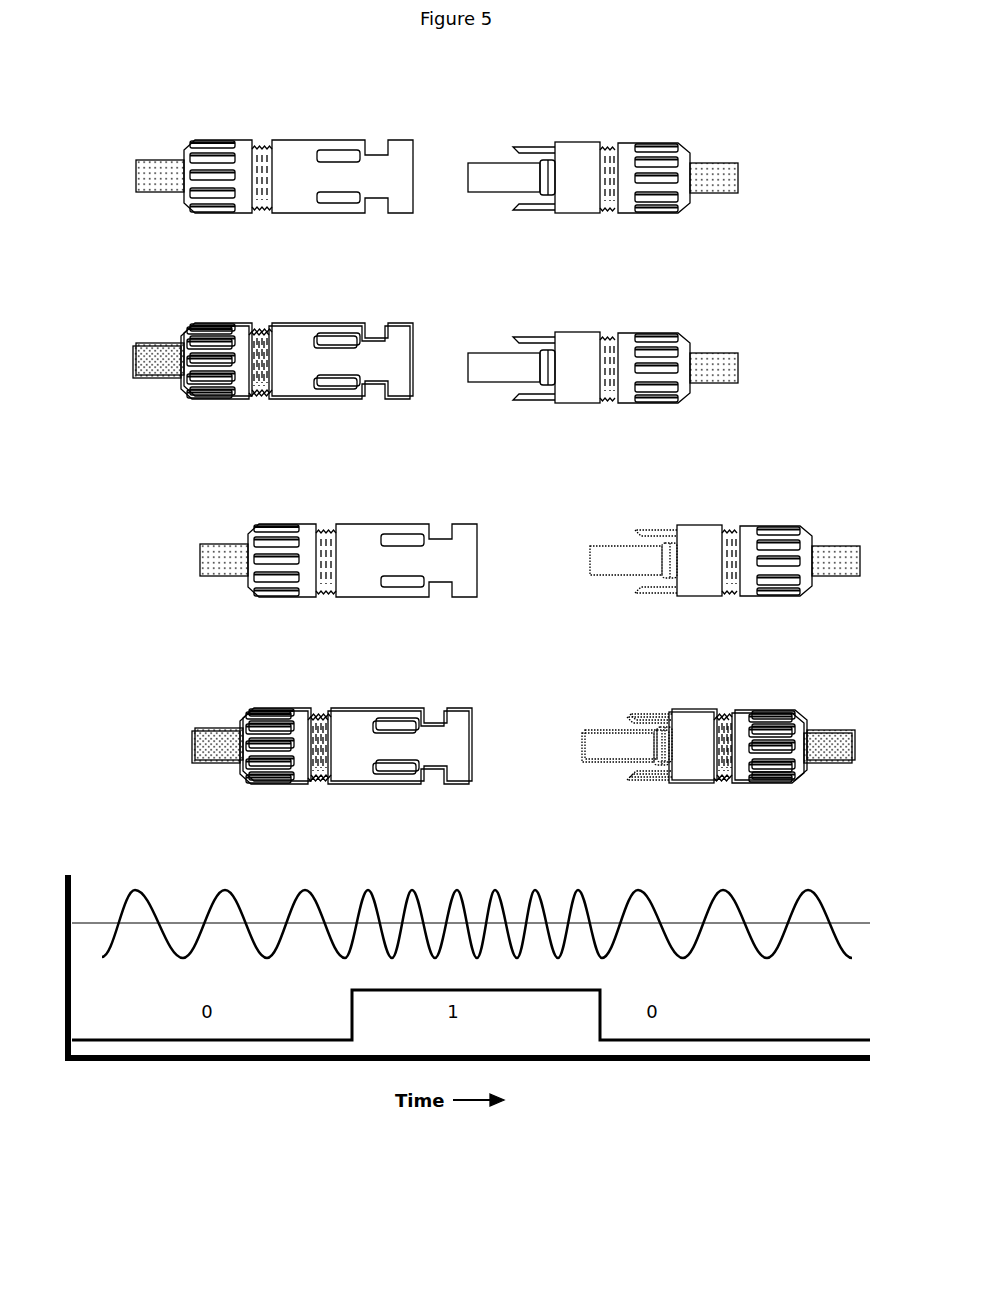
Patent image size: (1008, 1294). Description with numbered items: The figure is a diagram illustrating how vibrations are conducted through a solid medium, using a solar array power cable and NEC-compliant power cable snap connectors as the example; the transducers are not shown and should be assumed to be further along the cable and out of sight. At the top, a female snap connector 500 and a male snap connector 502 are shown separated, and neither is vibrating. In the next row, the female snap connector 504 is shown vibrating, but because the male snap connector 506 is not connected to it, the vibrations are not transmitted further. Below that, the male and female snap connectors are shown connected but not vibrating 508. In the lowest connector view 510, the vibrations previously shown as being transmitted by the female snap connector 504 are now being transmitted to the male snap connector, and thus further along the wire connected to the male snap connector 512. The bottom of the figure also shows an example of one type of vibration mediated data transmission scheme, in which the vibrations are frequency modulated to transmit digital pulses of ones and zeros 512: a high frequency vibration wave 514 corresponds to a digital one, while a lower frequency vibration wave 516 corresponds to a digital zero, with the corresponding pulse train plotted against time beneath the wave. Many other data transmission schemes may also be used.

The female snap connector (not vibrating) 500 is at (338, 127).
The male snap connector (not vibrating) 502 is at (598, 128).
The vibrating female snap connector 504 is at (325, 317).
The male snap connector (disconnected) 506 is at (577, 322).
The connected snap connectors (not vibrating) 508 is at (448, 508).
The connected snap connectors (vibrating) 510 is at (463, 690).
The frequency modulated vibration signal 512 is at (493, 906).
The high frequency vibration wave 514 is at (482, 878).
The lower frequency vibration wave 516 is at (183, 890).